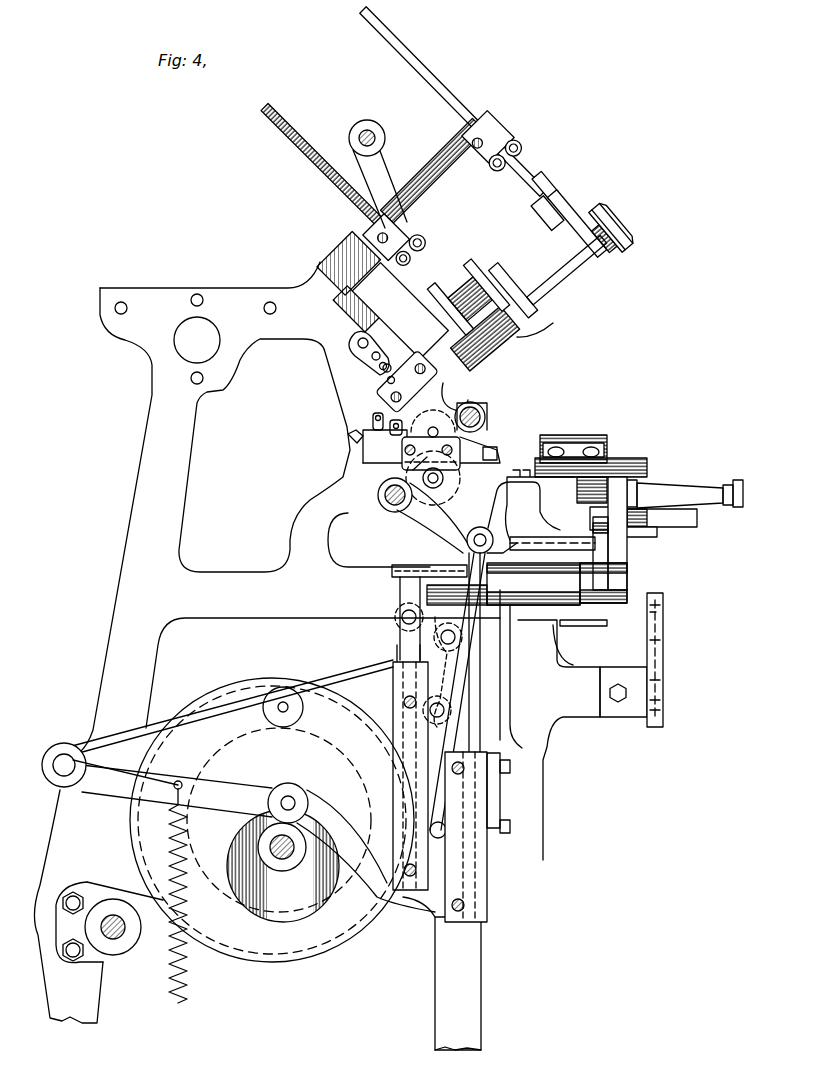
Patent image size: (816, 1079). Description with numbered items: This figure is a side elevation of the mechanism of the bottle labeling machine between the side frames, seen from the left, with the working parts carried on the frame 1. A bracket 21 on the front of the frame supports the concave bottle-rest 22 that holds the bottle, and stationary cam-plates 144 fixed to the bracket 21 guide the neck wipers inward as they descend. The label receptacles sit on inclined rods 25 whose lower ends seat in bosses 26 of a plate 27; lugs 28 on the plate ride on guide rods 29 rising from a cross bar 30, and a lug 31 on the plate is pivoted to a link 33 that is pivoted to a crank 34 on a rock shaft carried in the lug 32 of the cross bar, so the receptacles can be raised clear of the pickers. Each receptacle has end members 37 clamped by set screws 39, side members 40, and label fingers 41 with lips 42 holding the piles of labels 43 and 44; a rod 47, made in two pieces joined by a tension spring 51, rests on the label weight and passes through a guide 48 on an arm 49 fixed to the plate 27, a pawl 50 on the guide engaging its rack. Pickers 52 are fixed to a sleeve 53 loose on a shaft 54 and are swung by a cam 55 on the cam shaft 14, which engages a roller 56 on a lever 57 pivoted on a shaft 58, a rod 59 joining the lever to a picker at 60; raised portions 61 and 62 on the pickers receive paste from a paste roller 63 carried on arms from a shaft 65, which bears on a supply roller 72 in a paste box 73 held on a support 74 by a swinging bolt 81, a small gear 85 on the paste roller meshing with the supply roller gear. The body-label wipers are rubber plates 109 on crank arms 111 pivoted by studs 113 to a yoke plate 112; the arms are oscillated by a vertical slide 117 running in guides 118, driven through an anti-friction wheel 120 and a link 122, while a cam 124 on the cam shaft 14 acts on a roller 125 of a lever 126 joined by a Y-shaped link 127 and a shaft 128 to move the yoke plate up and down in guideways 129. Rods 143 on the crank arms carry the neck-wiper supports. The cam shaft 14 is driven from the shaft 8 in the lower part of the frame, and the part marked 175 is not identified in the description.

The frame 1 is at (152, 411).
The shaft 8 is at (122, 937).
The cam shaft 14 is at (270, 847).
The bracket 21 is at (555, 657).
The bottle-rest 22 is at (657, 534).
The inclined rods 25 is at (552, 285).
The bosses 26 is at (470, 385).
The plate 27 is at (387, 307).
The lugs 28 is at (362, 322).
The guide rods 29 is at (340, 293).
The cross bar 30 is at (390, 390).
The lug 31 is at (357, 317).
The lug 32 is at (385, 384).
The link 33 is at (370, 353).
The crank 34 is at (381, 370).
The transverse end members 37 is at (587, 200).
The set screw 39 is at (590, 250).
The side members 40 is at (557, 227).
The label fingers 41 is at (547, 187).
The lips 42 is at (553, 323).
The labels 43 is at (510, 348).
The labels 44 is at (610, 250).
The rod 47 is at (389, 44).
The guide 48 is at (498, 141).
The arm 49 is at (450, 187).
The pawl 50 is at (385, 236).
The tension spring 51 is at (287, 120).
The pickers 52 is at (430, 527).
The sleeve 53 is at (397, 512).
The shaft 54 is at (380, 497).
The cam 55 is at (260, 900).
The roller 56 is at (297, 790).
The lever 57 is at (330, 807).
The shaft 58 is at (60, 778).
The rod 59 is at (457, 700).
The pivot point 60 is at (467, 540).
The raised portion 61 is at (647, 480).
The raised portion 62 is at (710, 483).
The paste roller 63 is at (486, 417).
The shaft 65 is at (380, 128).
The supply roller 72 is at (489, 404).
The paste box 73 is at (467, 447).
The support 74 is at (463, 477).
The swinging bolt 81 is at (348, 440).
The small gear 85 is at (487, 427).
The rubber plates 109 is at (580, 437).
The crank arms 111 is at (618, 548).
The yoke plate 112 is at (398, 583).
The studs 113 is at (540, 587).
The vertical slide 117 is at (473, 730).
The guides 118 is at (463, 862).
The anti-friction wheel 120 is at (487, 840).
The link 122 is at (438, 672).
The cam 124 is at (220, 697).
The anti-friction roller 125 is at (288, 688).
The lever 126 is at (367, 660).
The Y-shaped link 127 is at (397, 638).
The shaft 128 is at (403, 617).
The guideways 129 is at (403, 730).
The rods 143 is at (698, 522).
The stationary cam-plates 144 is at (663, 637).
The spring 175 is at (188, 960).